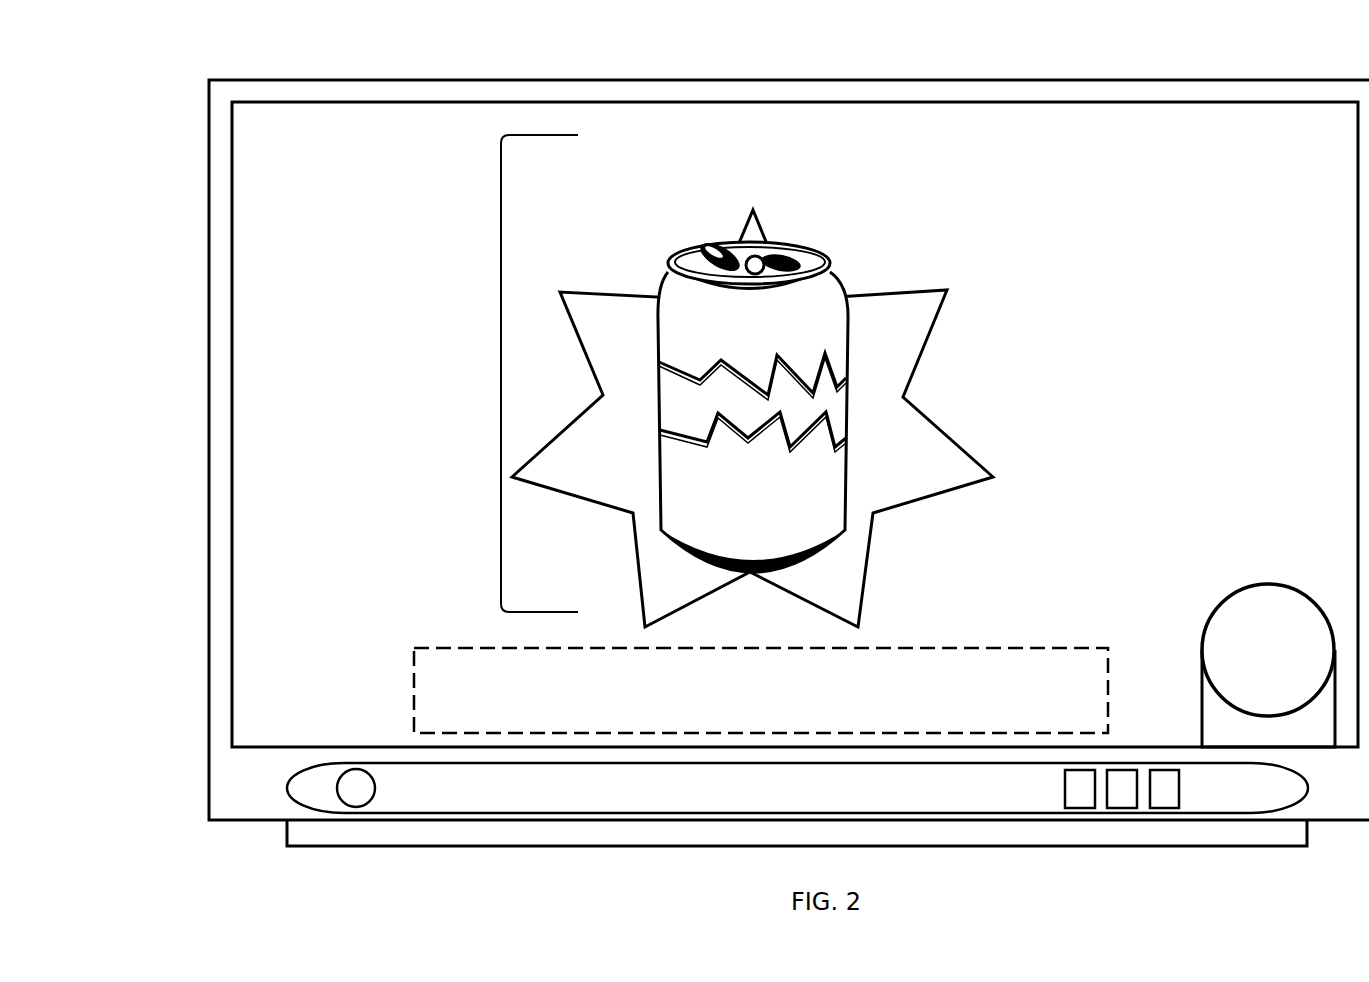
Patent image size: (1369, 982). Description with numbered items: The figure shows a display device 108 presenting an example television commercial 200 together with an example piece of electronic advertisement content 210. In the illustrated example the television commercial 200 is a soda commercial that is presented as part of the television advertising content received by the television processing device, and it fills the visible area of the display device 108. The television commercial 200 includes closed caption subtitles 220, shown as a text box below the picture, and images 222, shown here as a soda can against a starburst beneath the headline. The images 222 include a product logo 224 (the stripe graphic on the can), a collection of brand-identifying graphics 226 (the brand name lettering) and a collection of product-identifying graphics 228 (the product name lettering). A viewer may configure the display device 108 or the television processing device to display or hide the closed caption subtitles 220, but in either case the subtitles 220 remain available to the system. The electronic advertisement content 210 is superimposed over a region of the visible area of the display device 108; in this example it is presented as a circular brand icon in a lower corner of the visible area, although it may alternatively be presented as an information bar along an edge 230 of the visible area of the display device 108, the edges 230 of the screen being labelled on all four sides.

The display device 108 is at (762, 444).
The television commercial 200 is at (687, 384).
The electronic advertisement content 210 is at (1256, 653).
The closed caption subtitles 220 is at (734, 671).
The images 222 is at (774, 359).
The product logo 224 is at (874, 402).
The brand-identifying graphics 226 is at (865, 254).
The product-identifying graphics 228 is at (846, 541).
The edge of the visible area 230 is at (795, 424).